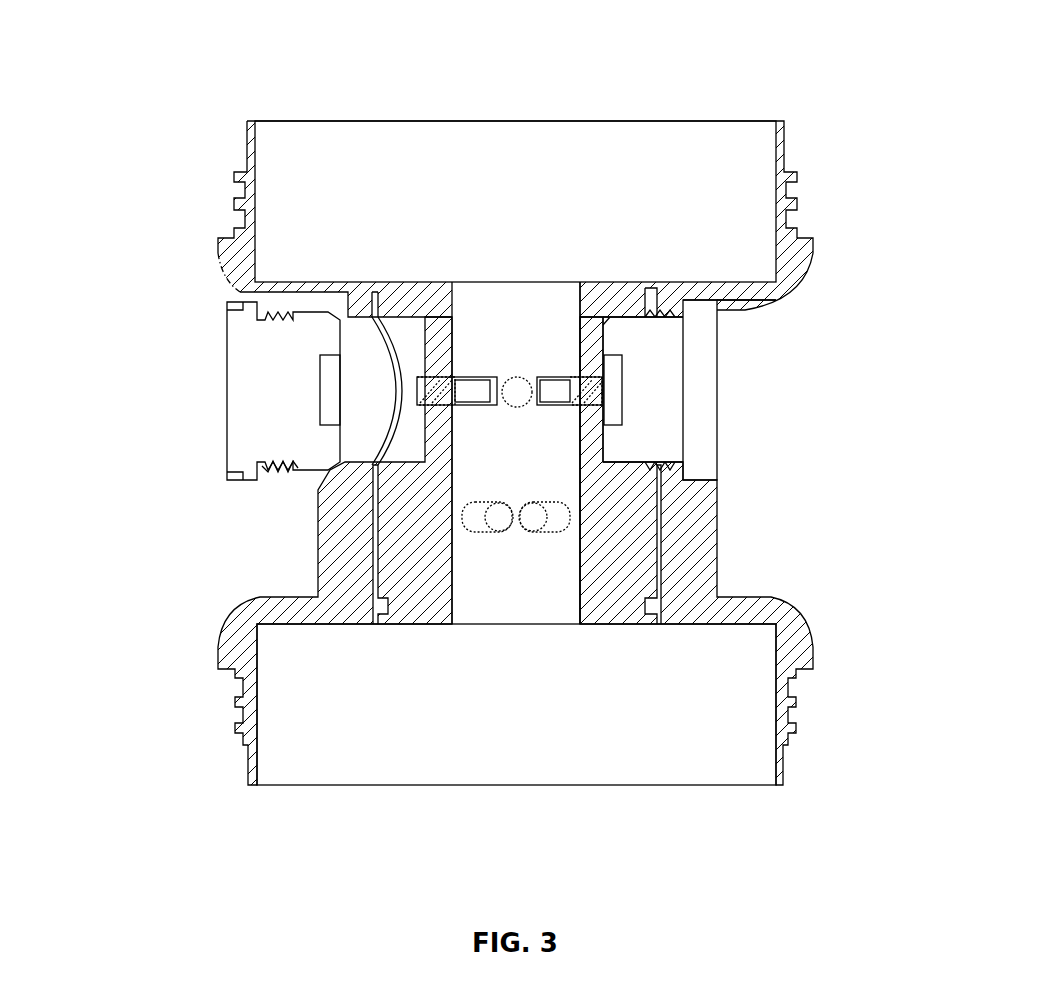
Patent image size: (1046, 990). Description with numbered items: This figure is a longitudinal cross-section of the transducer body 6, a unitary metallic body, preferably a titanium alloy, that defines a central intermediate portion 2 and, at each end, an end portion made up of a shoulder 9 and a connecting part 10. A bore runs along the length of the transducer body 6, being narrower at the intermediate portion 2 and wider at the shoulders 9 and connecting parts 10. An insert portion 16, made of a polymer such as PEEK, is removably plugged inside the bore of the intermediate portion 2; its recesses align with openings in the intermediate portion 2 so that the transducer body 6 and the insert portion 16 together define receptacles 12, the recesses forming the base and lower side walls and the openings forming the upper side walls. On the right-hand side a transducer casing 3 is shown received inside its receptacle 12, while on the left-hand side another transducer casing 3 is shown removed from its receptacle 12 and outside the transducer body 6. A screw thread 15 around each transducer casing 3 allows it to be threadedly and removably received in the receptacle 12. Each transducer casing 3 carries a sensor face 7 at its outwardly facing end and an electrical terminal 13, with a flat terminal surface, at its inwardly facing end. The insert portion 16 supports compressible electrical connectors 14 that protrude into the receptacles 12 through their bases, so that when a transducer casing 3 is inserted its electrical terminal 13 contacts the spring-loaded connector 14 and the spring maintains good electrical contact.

The intermediate portion 2 is at (499, 437).
The transducer casing 3 is at (680, 360).
The transducer body 6 is at (690, 570).
The sensor face 7 is at (226, 346).
The shoulder 9 is at (822, 253).
The connecting part 10 is at (806, 140).
The receptacle 12 is at (376, 375).
The electrical terminal 13 is at (614, 389).
The compressible electrical connector 14 is at (555, 418).
The screw thread 15 is at (272, 478).
The insert portion 16 is at (596, 305).